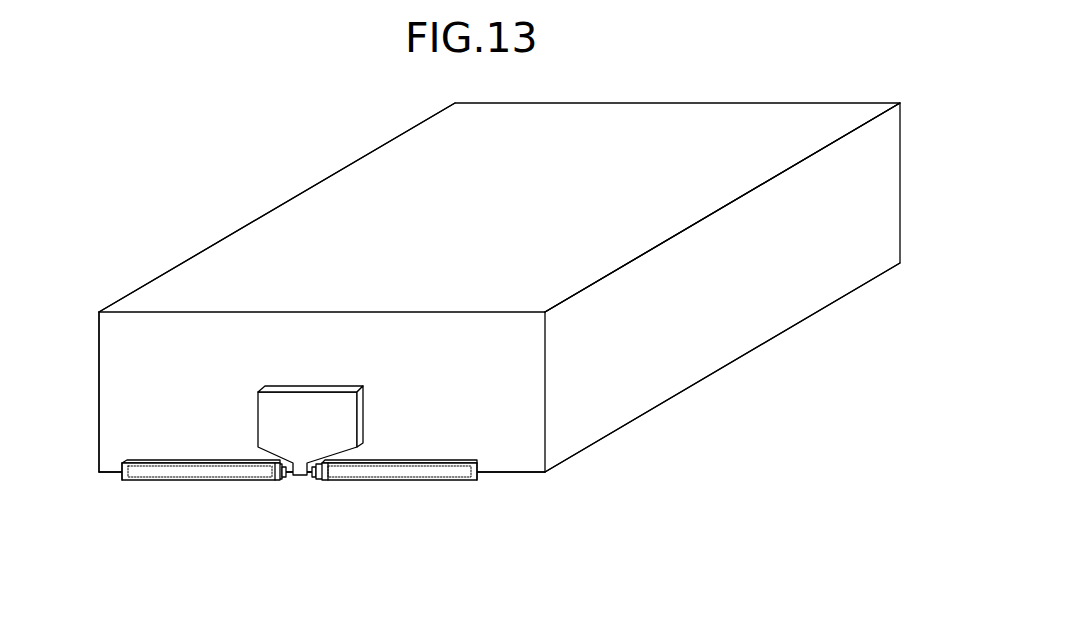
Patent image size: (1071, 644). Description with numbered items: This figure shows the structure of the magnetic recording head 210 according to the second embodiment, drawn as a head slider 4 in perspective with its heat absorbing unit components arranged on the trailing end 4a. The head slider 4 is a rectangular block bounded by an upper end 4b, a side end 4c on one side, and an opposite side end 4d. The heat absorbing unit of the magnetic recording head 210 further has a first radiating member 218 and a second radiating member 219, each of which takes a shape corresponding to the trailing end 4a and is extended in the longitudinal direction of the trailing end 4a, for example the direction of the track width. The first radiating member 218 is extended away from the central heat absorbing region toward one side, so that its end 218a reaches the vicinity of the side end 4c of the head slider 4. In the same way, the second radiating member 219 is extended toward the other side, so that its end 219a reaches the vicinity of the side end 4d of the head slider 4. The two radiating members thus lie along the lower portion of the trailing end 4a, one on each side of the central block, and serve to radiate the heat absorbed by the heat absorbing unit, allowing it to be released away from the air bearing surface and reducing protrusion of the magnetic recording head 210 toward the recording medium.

The head slider 4 is at (692, 357).
The trailing end 4a is at (513, 449).
The upper end 4b is at (345, 195).
The side end 4c is at (642, 398).
The side end 4d is at (88, 398).
The magnetic recording head 210 is at (299, 494).
The first radiating member 218 is at (405, 478).
The end of first radiating member 218a is at (489, 472).
The second radiating member 219 is at (177, 481).
The end of second radiating member 219a is at (112, 475).